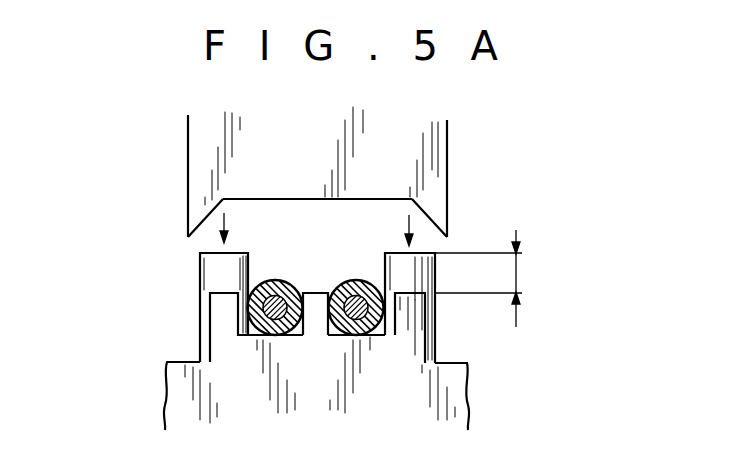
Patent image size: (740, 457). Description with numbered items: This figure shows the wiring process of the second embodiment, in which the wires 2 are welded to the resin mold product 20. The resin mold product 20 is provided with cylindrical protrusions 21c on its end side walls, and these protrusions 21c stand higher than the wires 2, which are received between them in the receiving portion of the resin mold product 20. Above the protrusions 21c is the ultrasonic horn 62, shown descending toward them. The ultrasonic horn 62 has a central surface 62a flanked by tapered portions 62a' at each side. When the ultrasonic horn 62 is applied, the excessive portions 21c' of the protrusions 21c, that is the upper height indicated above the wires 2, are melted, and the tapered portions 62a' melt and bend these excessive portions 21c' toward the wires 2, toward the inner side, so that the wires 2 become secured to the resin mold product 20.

The wires 2 is at (285, 283).
The resin mold product 20 is at (464, 390).
The cylindrical protrusions 21c is at (316, 311).
The excessive portions 21c' is at (533, 278).
The ultrasonic horn 62 is at (432, 148).
The pressing surface of ultrasonic horn 62a is at (317, 159).
The tapered portions 62a' is at (315, 217).